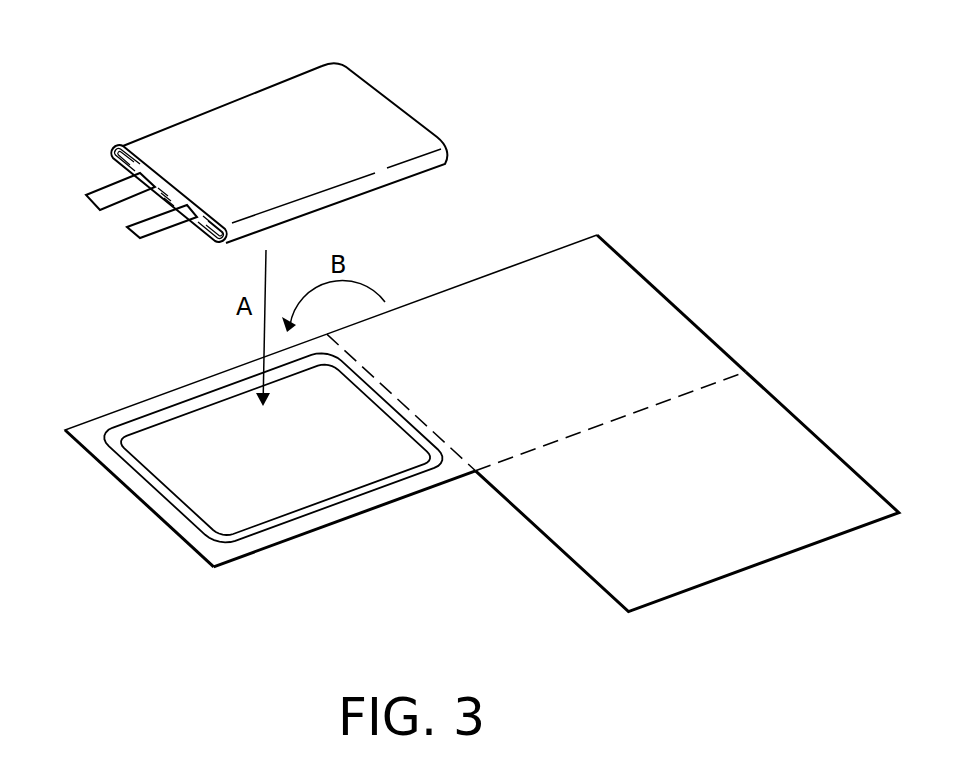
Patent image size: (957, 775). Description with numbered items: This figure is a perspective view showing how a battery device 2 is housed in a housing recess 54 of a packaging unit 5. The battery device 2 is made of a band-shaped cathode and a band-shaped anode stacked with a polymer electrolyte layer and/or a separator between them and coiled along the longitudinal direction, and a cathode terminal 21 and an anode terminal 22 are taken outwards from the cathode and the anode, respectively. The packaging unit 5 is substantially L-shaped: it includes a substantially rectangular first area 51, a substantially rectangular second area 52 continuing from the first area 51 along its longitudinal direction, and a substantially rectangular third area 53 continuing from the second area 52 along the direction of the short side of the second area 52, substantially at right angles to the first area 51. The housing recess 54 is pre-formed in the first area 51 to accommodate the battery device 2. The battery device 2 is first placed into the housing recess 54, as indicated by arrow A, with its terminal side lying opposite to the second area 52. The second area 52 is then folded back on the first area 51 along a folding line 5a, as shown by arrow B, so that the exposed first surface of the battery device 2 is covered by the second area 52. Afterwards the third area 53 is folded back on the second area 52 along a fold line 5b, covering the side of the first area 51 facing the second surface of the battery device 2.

The battery device 2 is at (287, 91).
The cathode terminal 21 is at (92, 204).
The anode terminal 22 is at (136, 234).
The packaging unit 5 is at (633, 197).
The folding line 5a is at (388, 388).
The fold line 5b is at (712, 384).
The first area 51 is at (92, 428).
The second area 52 is at (642, 302).
The third area 53 is at (772, 418).
The housing recess 54 is at (210, 503).